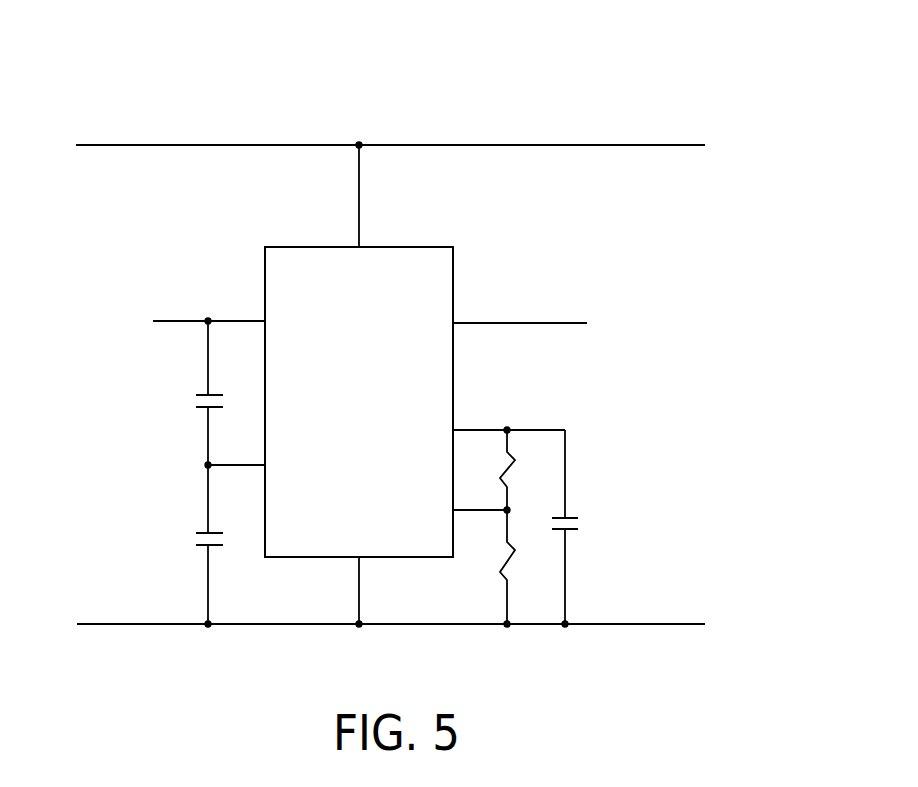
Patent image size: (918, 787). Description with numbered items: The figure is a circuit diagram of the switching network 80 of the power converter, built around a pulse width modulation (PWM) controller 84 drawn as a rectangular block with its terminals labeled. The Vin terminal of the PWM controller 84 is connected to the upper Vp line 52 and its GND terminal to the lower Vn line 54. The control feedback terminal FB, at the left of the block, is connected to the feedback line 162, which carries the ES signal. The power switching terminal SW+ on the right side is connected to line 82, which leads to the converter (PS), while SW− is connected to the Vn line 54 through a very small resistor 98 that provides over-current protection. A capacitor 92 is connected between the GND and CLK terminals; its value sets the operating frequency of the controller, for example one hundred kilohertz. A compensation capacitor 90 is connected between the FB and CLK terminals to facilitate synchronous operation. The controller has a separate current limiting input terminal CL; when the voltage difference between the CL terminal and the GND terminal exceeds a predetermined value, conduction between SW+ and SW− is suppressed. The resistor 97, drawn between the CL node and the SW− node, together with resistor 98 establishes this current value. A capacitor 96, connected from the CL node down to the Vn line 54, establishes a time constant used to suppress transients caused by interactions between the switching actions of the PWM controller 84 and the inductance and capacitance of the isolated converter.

The switching network 80 is at (548, 96).
The Vp line 52 is at (142, 144).
The Vn line 54 is at (117, 624).
The pulse width modulation (PWM) controller 84 is at (317, 247).
The line 82 is at (546, 322).
The feedback line 162 is at (170, 320).
The compensation capacitor 90 is at (213, 395).
The capacitor 92 is at (213, 533).
The capacitor 96 is at (567, 517).
The resistor 97 is at (507, 458).
The resistor 98 is at (505, 576).